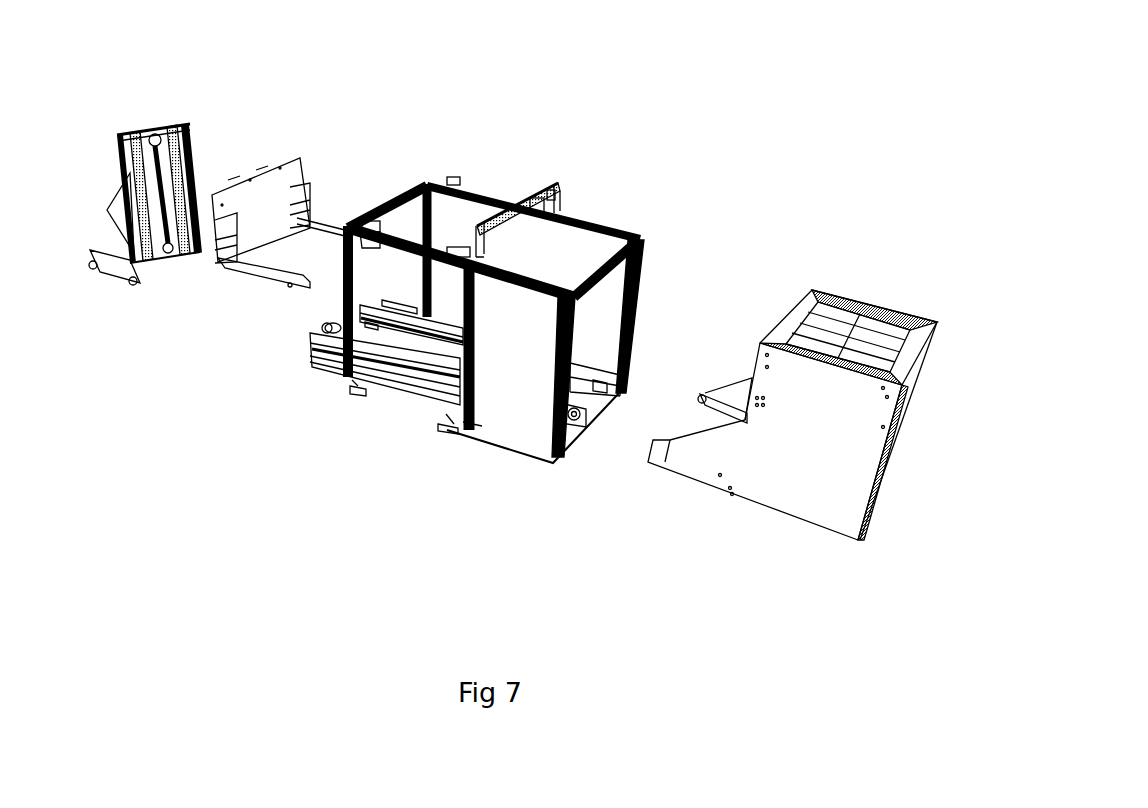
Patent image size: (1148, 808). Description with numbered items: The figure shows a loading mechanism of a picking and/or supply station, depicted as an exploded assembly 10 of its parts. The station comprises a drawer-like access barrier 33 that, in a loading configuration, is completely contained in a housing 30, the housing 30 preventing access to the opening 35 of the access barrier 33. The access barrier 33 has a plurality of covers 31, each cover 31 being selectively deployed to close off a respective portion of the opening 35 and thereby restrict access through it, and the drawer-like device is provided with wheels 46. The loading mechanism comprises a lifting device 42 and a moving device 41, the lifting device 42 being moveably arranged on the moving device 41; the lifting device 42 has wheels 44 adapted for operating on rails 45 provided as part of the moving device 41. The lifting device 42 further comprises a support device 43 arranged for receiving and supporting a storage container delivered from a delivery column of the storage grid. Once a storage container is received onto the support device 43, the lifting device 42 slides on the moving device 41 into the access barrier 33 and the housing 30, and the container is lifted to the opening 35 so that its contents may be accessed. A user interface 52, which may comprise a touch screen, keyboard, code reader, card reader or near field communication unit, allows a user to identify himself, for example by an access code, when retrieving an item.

The storage and retrieval device 10 is at (650, 115).
The housing 30 is at (570, 240).
The cover 31 is at (857, 352).
The access barrier 33 is at (795, 312).
The opening 35 is at (861, 311).
The moving device 41 is at (447, 355).
The lifting device 42 is at (122, 273).
The support device 43 is at (245, 267).
The wheels of the lifting device 44 is at (92, 267).
The rails of the moving device 45 is at (325, 362).
The wheels of the drawer-like device 46 is at (702, 395).
The user interface 52 is at (520, 230).